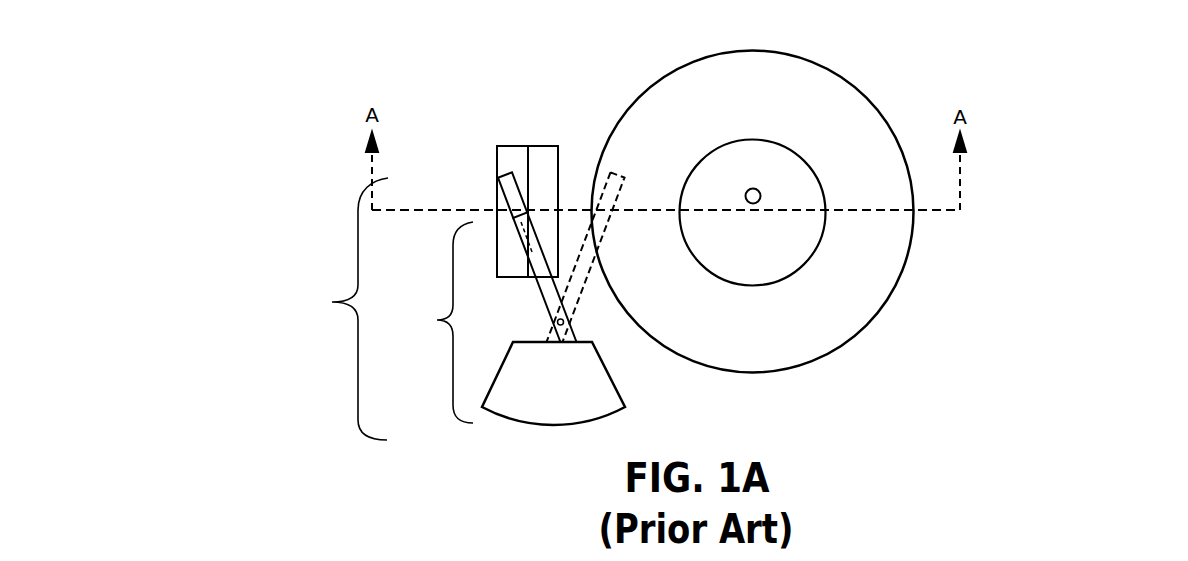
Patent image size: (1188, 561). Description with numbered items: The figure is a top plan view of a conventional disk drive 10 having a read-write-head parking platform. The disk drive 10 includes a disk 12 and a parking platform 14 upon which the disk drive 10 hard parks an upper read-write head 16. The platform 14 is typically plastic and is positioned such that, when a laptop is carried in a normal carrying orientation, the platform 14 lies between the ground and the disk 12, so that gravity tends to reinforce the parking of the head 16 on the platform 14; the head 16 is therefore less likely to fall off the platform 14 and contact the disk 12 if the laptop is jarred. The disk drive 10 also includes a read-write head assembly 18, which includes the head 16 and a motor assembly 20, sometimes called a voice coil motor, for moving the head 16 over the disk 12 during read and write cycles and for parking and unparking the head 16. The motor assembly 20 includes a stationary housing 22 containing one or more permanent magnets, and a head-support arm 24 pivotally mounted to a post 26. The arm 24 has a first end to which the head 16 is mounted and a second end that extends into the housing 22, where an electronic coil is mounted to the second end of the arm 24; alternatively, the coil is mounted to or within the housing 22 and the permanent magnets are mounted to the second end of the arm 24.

The disk drive 10 is at (1088, 281).
The disk 12 is at (833, 70).
The parking platform 14 is at (537, 143).
The upper read-write head 16 is at (503, 173).
The read-write head assembly 18 is at (345, 309).
The motor assembly 20 is at (439, 322).
The stationary housing 22 is at (538, 425).
The head-support arm 24 is at (547, 302).
The post 26 is at (570, 319).